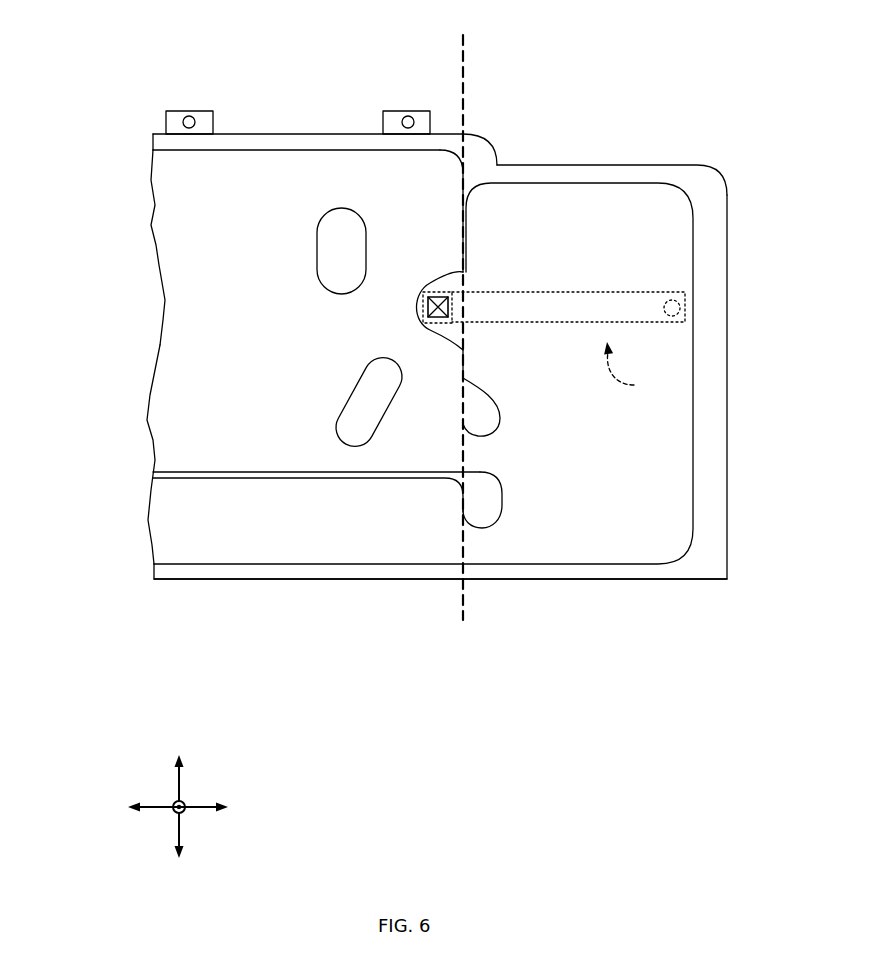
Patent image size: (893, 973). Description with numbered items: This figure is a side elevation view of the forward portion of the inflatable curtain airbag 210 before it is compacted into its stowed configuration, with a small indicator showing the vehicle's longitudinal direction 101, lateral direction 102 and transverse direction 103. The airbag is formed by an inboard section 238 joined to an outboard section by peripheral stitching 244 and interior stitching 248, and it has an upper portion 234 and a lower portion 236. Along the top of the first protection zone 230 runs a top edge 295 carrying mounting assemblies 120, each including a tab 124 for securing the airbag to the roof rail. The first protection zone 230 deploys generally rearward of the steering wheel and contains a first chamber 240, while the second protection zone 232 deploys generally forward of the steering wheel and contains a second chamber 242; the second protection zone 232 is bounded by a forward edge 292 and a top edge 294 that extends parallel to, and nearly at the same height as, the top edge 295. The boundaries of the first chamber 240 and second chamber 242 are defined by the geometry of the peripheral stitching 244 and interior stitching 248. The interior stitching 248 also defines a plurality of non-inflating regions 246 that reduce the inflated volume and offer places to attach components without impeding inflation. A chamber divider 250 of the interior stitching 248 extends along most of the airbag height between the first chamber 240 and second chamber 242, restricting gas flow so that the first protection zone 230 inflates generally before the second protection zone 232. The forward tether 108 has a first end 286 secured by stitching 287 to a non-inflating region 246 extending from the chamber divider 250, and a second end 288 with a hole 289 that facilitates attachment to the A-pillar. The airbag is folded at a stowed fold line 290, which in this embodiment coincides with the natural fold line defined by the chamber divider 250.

The longitudinal direction 101 is at (208, 802).
The lateral direction 102 is at (186, 812).
The transverse direction 103 is at (182, 772).
The forward tether 108 is at (639, 369).
The mounting assemblies 120 is at (377, 97).
The tab 124 is at (181, 111).
The inflatable curtain airbag 210 is at (600, 52).
The first protection zone 230 is at (300, 612).
The second protection zone 232 is at (596, 612).
The upper portion 234 is at (182, 211).
The lower portion 236 is at (182, 439).
The inboard section 238 is at (391, 213).
The first chamber 240 is at (245, 326).
The second chamber 242 is at (572, 431).
The peripheral stitching 244 is at (238, 150).
The non-inflating regions 246 is at (432, 336).
The interior stitching 248 is at (253, 470).
The chamber divider 250 is at (492, 373).
The first end 286 is at (440, 291).
The stitching 287 is at (428, 308).
The second end 288 is at (672, 299).
The hole 289 is at (672, 317).
The stowed fold line 290 is at (463, 63).
The forward edge 292 is at (728, 553).
The top edge 294 is at (658, 166).
The top edge 295 is at (300, 140).